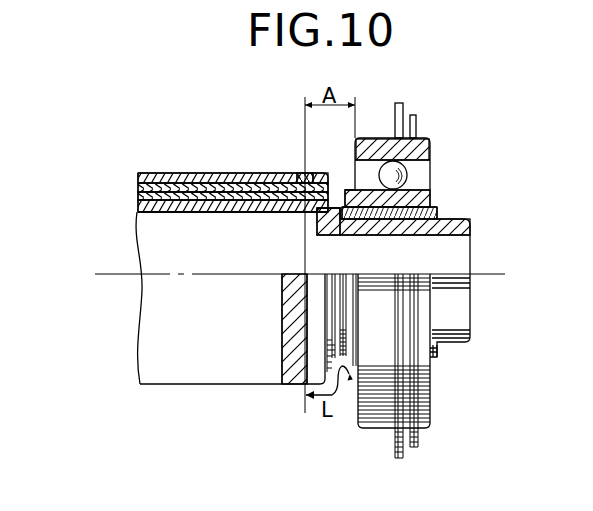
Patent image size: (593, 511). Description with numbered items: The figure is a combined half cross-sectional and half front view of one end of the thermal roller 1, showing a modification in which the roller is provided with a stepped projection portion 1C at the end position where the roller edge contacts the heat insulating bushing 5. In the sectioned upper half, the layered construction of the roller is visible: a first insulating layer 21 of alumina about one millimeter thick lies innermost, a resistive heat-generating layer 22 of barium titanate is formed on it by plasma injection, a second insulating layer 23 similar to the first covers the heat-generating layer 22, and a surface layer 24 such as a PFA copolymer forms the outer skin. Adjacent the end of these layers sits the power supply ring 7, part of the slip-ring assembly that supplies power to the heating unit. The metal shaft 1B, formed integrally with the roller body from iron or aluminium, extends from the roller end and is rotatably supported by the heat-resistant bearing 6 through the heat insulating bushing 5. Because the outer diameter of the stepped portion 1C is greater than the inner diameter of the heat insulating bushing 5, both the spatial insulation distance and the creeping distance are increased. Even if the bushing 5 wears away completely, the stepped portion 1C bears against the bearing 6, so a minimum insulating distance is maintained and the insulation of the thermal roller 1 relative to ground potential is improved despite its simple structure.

The thermal roller 1 is at (128, 280).
The metal shaft 1B is at (468, 248).
The stepped projection portion 1C is at (333, 202).
The heat insulating bushing 5 is at (437, 207).
The heat-resistant bearing 6 is at (430, 172).
The power supply ring 7 is at (300, 172).
The first insulating layer 21 is at (138, 207).
The resistive heat-generating layer 22 is at (138, 196).
The second insulating layer 23 is at (138, 187).
The surface layer 24 is at (138, 178).